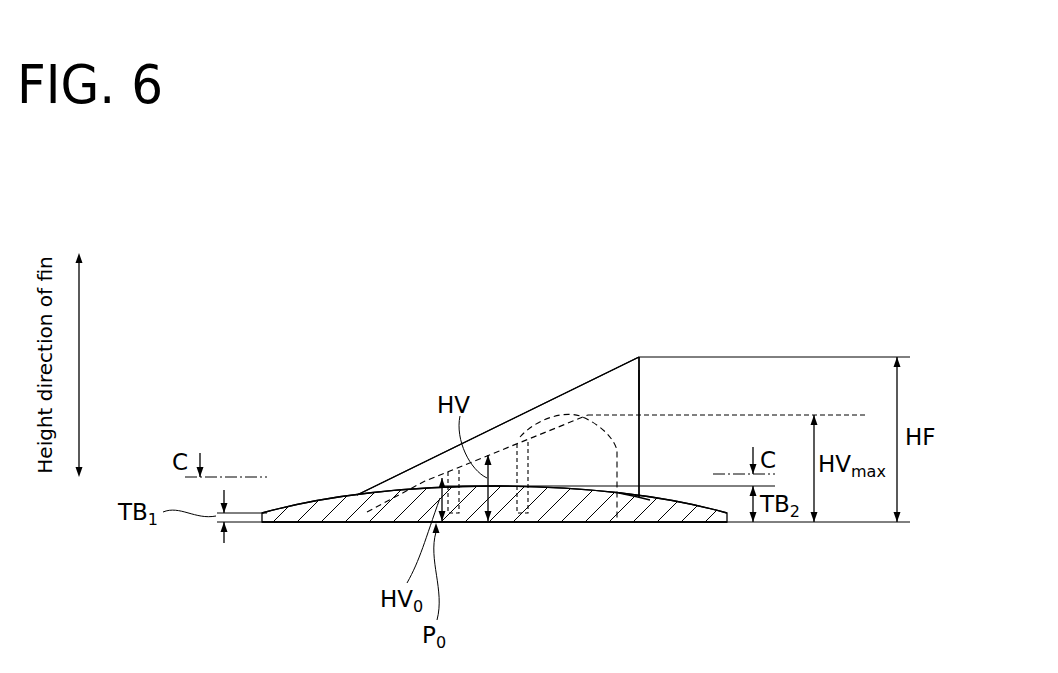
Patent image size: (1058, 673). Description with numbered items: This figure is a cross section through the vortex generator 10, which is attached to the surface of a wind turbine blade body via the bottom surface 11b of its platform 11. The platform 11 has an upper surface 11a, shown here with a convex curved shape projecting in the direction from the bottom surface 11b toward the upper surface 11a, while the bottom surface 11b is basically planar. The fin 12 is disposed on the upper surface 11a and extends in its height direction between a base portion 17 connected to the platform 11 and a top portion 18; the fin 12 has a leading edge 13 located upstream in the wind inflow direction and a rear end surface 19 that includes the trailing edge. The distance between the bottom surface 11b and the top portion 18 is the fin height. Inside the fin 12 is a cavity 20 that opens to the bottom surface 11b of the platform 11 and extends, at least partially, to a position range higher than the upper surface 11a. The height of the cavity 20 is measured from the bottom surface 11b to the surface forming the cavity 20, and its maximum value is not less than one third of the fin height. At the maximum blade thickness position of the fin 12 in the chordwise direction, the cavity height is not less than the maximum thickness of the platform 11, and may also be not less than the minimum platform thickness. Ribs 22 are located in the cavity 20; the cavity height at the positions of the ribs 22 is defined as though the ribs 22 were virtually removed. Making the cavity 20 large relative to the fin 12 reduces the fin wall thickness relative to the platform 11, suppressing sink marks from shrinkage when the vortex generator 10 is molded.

The vortex generator 10 is at (714, 234).
The platform 11 is at (330, 502).
The upper surface 11a is at (445, 478).
The bottom surface 11b is at (367, 523).
The fin 12 is at (540, 404).
The leading edge 13 is at (502, 423).
The base portion 17 is at (642, 496).
The top portion 18 is at (639, 355).
The rear end surface 19 is at (641, 385).
The cavity 20 is at (563, 450).
The ribs 22 is at (455, 525).